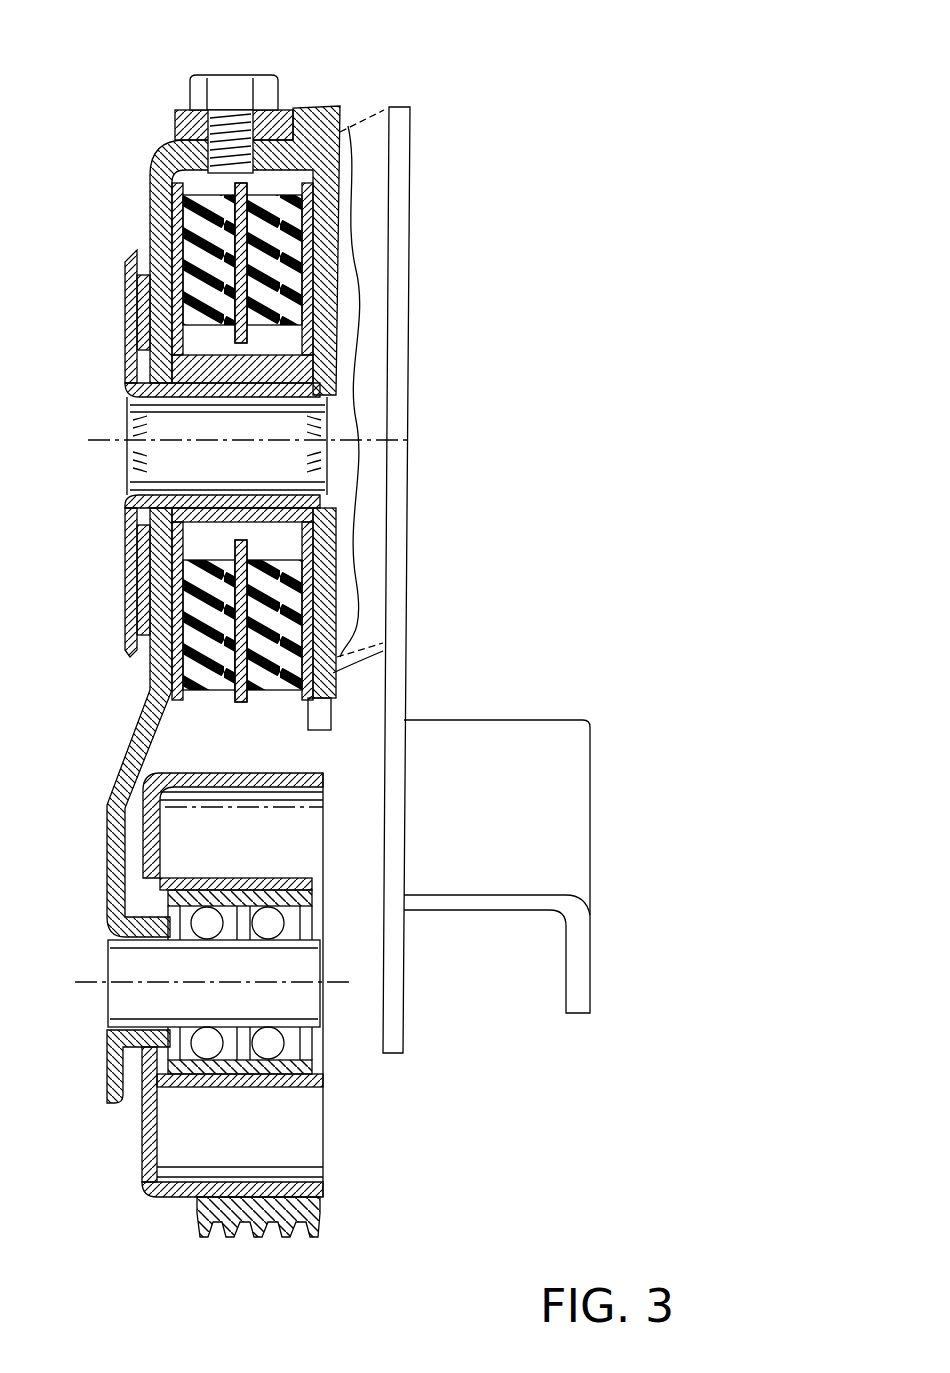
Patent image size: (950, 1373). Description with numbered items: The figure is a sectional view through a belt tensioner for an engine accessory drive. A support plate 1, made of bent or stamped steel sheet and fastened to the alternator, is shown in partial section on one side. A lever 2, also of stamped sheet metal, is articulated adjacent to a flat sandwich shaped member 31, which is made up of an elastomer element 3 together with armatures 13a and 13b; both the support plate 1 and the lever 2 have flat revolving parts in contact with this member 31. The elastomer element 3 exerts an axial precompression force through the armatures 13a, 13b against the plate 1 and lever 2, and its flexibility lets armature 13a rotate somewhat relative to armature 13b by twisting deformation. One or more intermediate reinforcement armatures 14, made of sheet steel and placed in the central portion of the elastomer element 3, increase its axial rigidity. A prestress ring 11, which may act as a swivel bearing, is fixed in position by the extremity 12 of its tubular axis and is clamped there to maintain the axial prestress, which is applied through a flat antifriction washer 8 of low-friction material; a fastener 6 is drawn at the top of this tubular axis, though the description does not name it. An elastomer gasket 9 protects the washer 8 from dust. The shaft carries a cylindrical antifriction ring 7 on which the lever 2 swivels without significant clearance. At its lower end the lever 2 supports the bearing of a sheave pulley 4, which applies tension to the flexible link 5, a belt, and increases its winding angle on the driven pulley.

The support plate 1 is at (412, 335).
The lever 2 is at (155, 185).
The elastomer element 3 is at (207, 655).
The sheave pulley 4 is at (206, 782).
The flexible link 5 is at (260, 1217).
The nut 6 is at (231, 90).
The cylindrical antifriction ring 7 is at (141, 433).
The antifriction washer 8 is at (128, 306).
The elastomer gasket 9 is at (150, 242).
The prestress ring 11 is at (128, 372).
The extremity of tubular axis 12 is at (333, 412).
The armature 13a is at (208, 247).
The armature 13b is at (303, 262).
The intermediate reinforcement armature 14 is at (240, 626).
The flat sandwich shaped member 31 is at (365, 553).